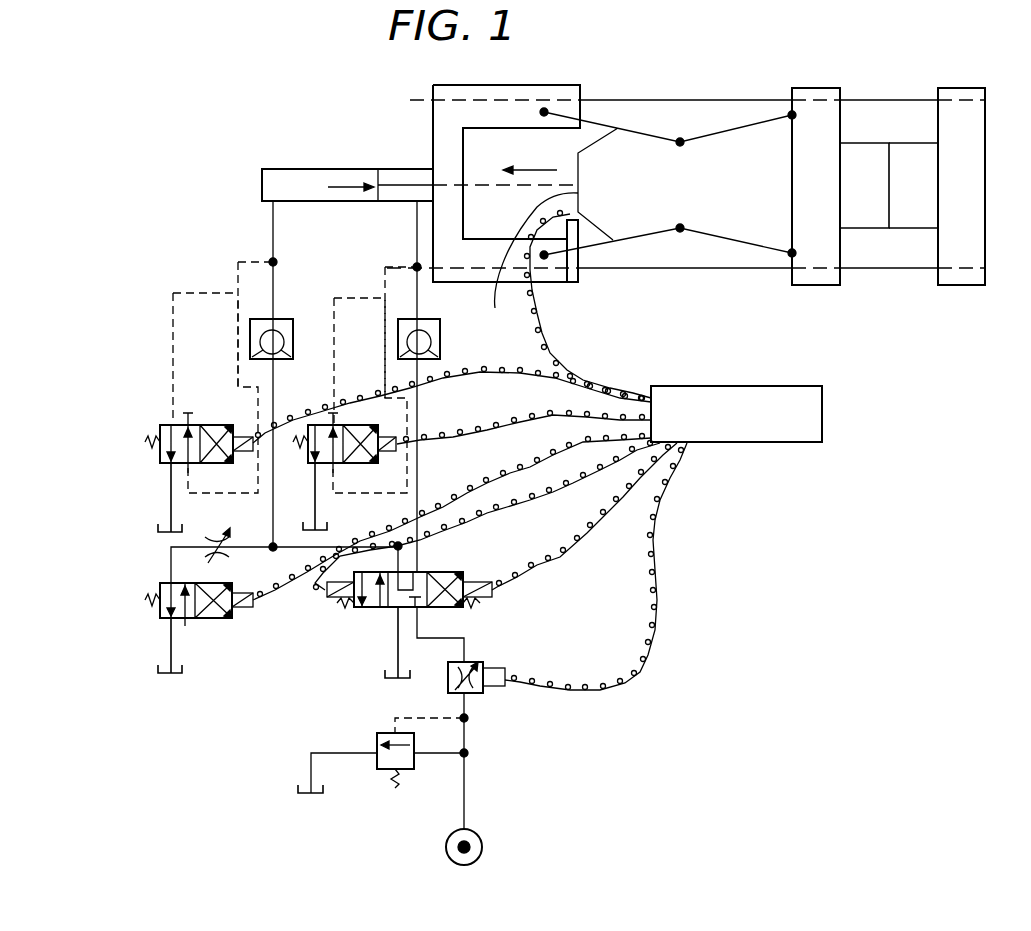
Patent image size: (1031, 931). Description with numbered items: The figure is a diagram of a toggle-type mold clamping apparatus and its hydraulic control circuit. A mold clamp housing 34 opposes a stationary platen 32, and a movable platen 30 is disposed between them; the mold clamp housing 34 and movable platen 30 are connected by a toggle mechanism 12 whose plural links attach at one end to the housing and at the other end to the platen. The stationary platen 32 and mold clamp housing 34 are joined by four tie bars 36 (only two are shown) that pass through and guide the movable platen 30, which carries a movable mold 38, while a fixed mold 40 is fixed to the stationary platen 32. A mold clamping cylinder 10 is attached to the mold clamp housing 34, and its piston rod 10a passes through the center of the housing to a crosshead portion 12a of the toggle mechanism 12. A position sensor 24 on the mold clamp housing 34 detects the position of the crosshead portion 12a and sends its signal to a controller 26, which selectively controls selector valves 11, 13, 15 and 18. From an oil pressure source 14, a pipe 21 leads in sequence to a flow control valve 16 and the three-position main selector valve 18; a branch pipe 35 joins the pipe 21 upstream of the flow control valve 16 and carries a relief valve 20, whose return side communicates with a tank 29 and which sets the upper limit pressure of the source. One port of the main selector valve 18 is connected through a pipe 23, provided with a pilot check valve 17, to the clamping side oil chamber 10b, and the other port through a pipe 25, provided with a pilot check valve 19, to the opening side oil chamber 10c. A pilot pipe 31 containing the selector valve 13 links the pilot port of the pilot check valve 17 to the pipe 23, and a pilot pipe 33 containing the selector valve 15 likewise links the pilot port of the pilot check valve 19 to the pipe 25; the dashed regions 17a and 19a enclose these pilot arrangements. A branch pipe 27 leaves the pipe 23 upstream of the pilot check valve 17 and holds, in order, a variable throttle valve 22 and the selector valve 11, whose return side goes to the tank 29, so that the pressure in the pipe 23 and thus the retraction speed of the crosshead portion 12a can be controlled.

The mold clamping cylinder 10 is at (318, 168).
The piston rod 10a is at (397, 202).
The clamping side oil chamber 10b is at (272, 200).
The opening side oil chamber 10c is at (402, 170).
The selector valve 11 is at (160, 608).
The toggle mechanism 12 is at (627, 137).
The crosshead portion 12a is at (527, 263).
The selector valve 13 is at (160, 432).
The oil pressure source 14 is at (482, 837).
The selector valve 15 is at (307, 460).
The flow control valve 16 is at (480, 694).
The pilot check valve 17 is at (280, 358).
The pilot line 17a is at (238, 313).
The main selector valve 18 is at (450, 610).
The pilot check valve 19 is at (440, 353).
The pilot line 19a is at (385, 310).
The relief valve 20 is at (378, 760).
The pipe 21 is at (467, 648).
The variable throttle valve 22 is at (227, 560).
The pipe 23 is at (275, 238).
The position sensor 24 is at (560, 237).
The pipe 25 is at (420, 300).
The controller 26 is at (790, 387).
The branch pipe 27 is at (168, 567).
The tank 29 is at (158, 528).
The movable platen 30 is at (815, 88).
The pilot pipe 31 is at (173, 300).
The stationary platen 32 is at (960, 88).
The pilot pipe 33 is at (332, 310).
The mold clamp housing 34 is at (533, 86).
The branch pipe 35 is at (440, 757).
The tie bars 36 is at (683, 100).
The movable mold 38 is at (864, 232).
The fixed mold 40 is at (912, 232).